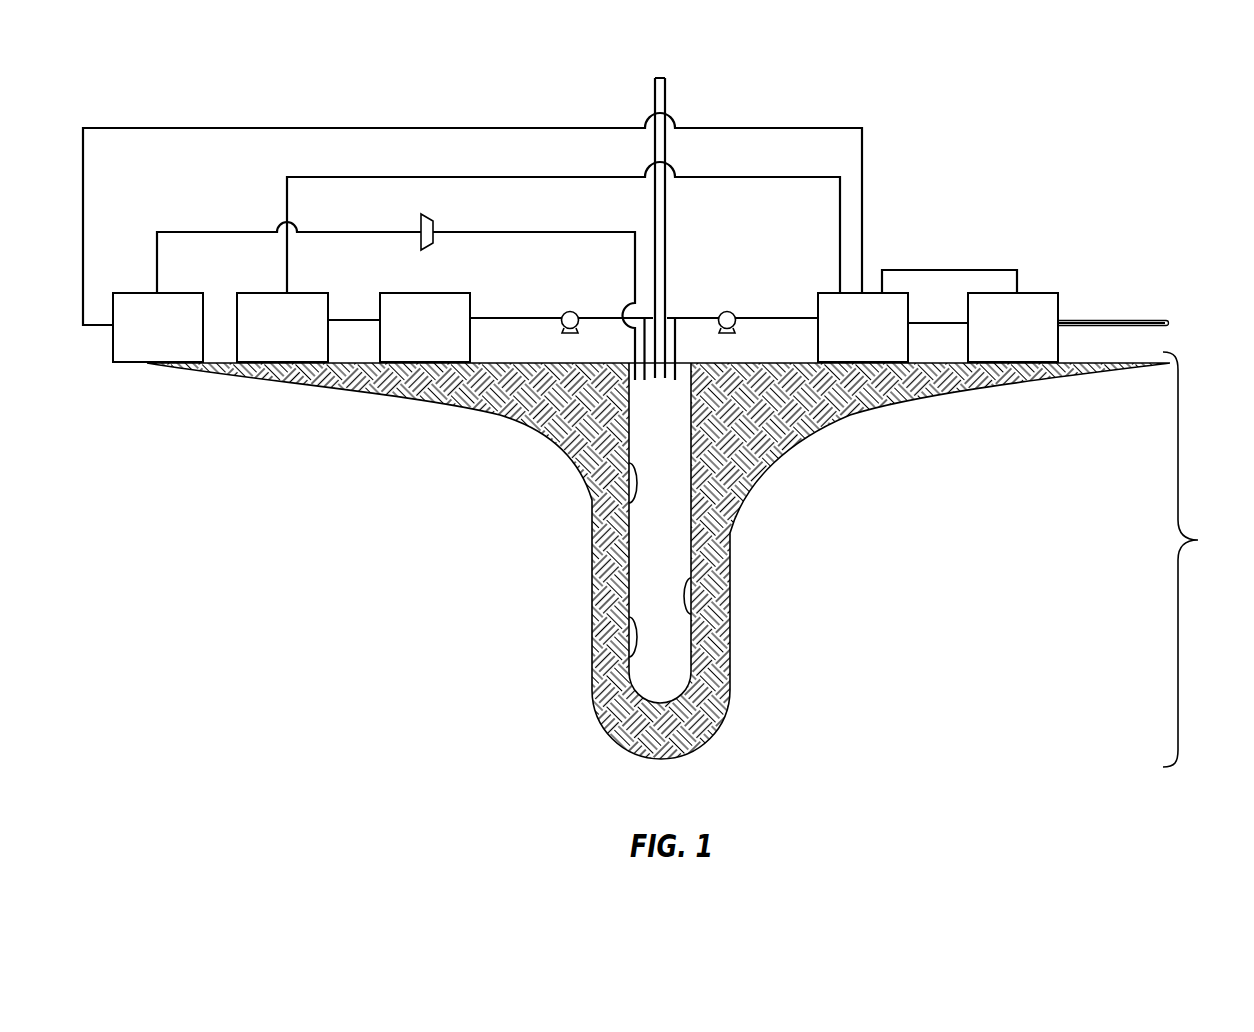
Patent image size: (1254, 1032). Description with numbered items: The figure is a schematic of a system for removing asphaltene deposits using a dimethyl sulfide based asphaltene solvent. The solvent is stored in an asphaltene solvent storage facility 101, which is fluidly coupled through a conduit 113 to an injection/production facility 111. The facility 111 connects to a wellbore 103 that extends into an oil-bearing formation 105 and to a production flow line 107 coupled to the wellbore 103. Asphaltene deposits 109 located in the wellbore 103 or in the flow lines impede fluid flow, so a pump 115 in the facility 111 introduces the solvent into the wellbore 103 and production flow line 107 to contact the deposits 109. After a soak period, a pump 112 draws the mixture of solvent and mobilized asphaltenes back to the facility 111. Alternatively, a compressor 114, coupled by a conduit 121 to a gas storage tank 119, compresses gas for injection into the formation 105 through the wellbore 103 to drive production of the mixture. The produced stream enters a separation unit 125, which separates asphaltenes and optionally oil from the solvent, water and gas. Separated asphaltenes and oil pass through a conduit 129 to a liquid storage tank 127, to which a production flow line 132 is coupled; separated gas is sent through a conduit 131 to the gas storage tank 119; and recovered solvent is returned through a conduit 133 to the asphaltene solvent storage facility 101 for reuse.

The asphaltene solvent storage facility 101 is at (305, 340).
The wellbore 103 is at (690, 557).
The oil-bearing formation 105 is at (1207, 559).
The production flow line 107 is at (667, 247).
The asphaltene deposits 109 is at (628, 483).
The injection/production facility 111 is at (446, 340).
The pump 112 is at (722, 311).
The conduit 113 is at (346, 316).
The compressor 114 is at (430, 213).
The pump 115 is at (572, 311).
The gas storage tank 119 is at (181, 340).
The conduit 121 is at (199, 229).
The separation unit 125 is at (885, 340).
The liquid storage tank 127 is at (1035, 340).
The conduit 129 is at (953, 268).
The conduit 131 is at (745, 124).
The production flow line 132 is at (1103, 318).
The conduit 133 is at (513, 175).